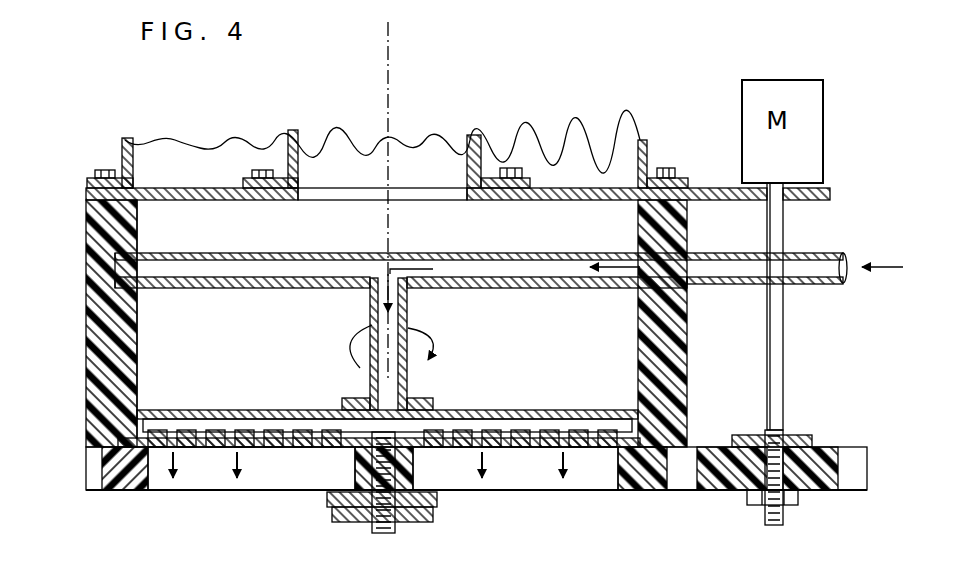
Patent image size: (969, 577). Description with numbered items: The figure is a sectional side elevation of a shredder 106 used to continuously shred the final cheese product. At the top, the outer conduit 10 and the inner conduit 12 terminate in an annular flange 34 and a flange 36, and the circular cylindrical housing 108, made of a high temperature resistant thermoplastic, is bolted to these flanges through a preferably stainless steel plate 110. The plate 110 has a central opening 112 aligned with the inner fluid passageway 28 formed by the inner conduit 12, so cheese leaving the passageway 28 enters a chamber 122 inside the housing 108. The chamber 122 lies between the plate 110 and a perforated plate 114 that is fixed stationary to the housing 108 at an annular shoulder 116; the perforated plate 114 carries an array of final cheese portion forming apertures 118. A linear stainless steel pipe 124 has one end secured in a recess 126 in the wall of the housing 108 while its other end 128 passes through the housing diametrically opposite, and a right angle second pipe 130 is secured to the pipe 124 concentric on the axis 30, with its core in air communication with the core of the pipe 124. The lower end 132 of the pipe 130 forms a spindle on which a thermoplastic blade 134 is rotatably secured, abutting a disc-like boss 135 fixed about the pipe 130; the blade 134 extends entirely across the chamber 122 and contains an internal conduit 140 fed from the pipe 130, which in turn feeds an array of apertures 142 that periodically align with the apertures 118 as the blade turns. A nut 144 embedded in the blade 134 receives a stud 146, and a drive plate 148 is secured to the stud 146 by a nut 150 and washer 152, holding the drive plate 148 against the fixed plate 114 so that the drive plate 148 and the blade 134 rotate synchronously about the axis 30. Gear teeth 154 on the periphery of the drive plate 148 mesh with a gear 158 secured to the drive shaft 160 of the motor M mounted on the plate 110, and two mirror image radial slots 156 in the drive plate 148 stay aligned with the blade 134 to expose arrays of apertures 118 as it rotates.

The outer conduit 10 is at (650, 150).
The inner conduit 12 is at (480, 135).
The inner fluid passageway 28 is at (420, 155).
The axis 30 is at (388, 55).
The annular flange 34 is at (686, 178).
The flange 36 is at (533, 168).
The shredder 106 is at (80, 215).
The housing 108 is at (138, 360).
The plate 110 is at (218, 200).
The central opening 112 is at (455, 200).
The perforated plate 114 is at (379, 459).
The annular shoulder 116 is at (636, 490).
The apertures 118 is at (182, 480).
The chamber 122 is at (234, 355).
The pipe 124 is at (572, 290).
The recess 126 is at (146, 288).
The other end 128 is at (800, 252).
The second pipe 130 is at (370, 312).
The lower end 132 is at (408, 385).
The blade 134 is at (312, 412).
The boss 135 is at (345, 398).
The internal conduit 140 is at (540, 418).
The apertures 142 is at (205, 430).
The nut 144 is at (357, 455).
The stud 146 is at (385, 530).
The drive plate 148 is at (305, 493).
The nut 150 is at (433, 515).
The washer 152 is at (438, 498).
The gear teeth 154 is at (90, 478).
The slots 156 is at (165, 483).
The gear 158 is at (826, 445).
The drive shaft 160 is at (785, 368).